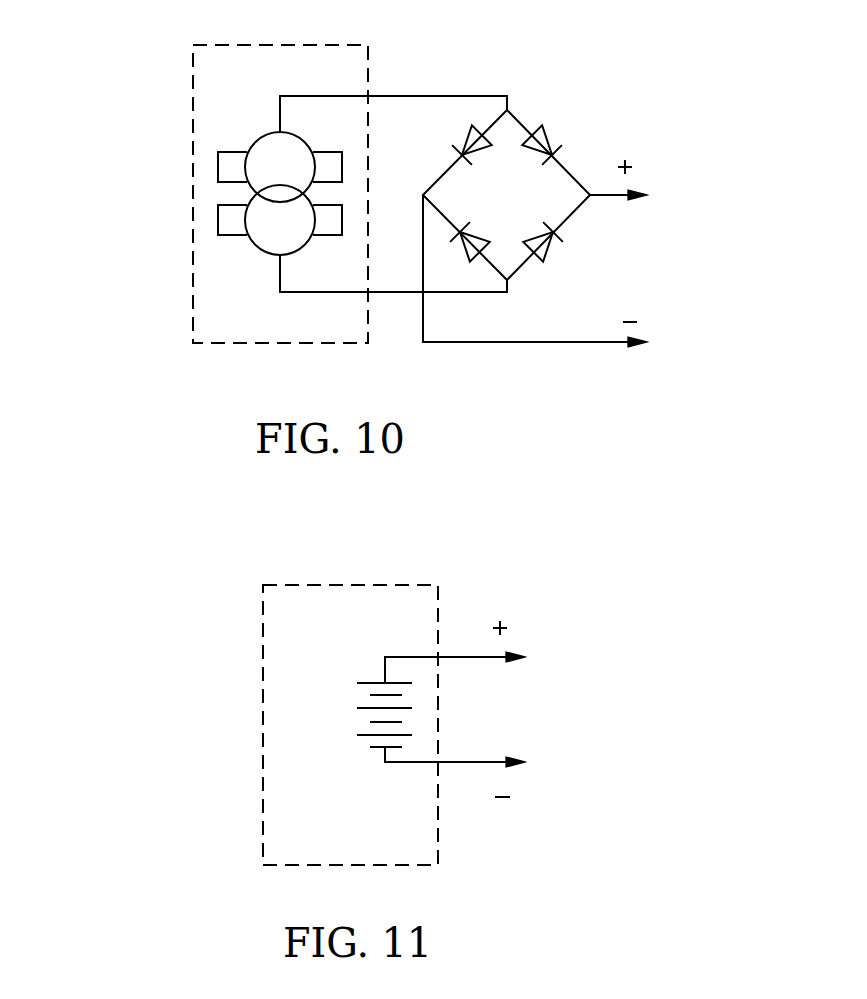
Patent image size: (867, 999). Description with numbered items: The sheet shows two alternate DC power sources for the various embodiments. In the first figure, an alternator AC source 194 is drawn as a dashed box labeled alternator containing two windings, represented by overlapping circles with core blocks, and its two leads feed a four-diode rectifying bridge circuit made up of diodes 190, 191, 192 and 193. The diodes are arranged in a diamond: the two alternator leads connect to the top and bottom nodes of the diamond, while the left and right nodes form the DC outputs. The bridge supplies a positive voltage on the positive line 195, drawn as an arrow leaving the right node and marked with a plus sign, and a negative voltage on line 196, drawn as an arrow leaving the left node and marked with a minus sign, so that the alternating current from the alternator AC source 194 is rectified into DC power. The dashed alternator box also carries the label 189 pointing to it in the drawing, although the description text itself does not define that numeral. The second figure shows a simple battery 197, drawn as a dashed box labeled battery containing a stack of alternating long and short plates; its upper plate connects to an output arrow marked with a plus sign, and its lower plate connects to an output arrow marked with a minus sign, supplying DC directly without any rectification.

In FIG. 10, the alternator 189 is at (193, 193).
In FIG. 10, the diode 190 is at (457, 149).
In FIG. 10, the diode 191 is at (480, 230).
In FIG. 10, the diode 192 is at (550, 248).
In FIG. 10, the diode 193 is at (545, 138).
In FIG. 10, the alternator AC source 194 is at (542, 88).
In FIG. 10, the positive line 195 is at (607, 197).
In FIG. 10, the line 196 is at (547, 343).
In FIG. 11, the battery 197 is at (265, 752).